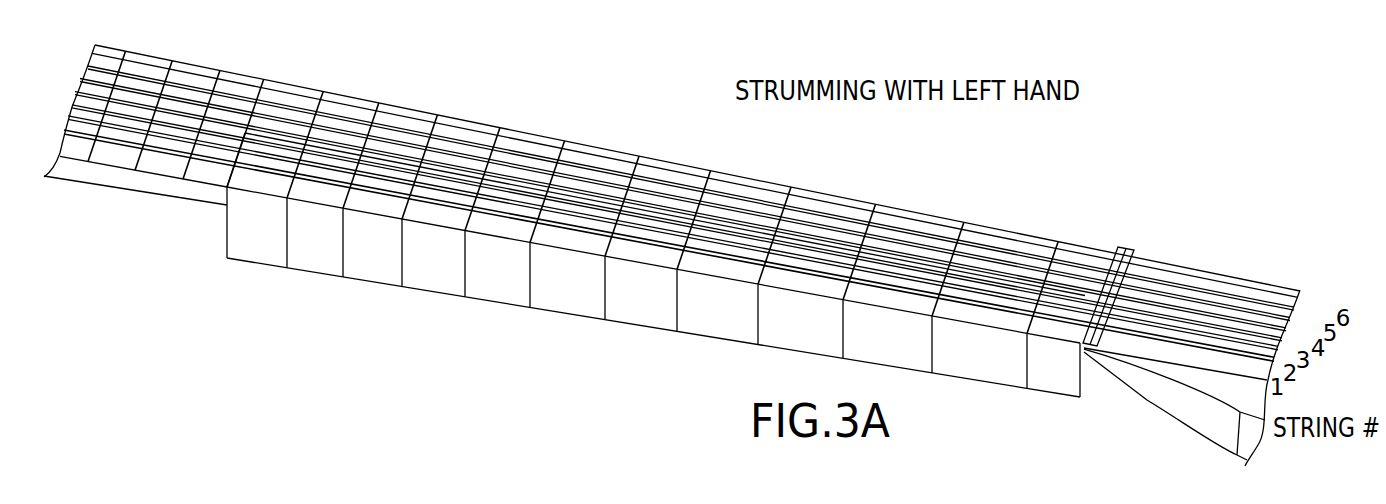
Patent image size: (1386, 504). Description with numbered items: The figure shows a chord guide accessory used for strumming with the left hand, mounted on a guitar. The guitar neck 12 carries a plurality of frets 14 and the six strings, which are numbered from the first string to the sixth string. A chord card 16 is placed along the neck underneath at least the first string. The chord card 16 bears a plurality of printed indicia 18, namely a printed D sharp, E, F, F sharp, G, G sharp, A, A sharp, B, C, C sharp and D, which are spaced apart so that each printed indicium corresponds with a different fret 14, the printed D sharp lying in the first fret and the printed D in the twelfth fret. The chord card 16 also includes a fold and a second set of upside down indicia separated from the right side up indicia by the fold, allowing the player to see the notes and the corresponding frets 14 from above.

The guitar neck 12 is at (405, 118).
The frets 14 is at (565, 153).
The chord card 16 is at (655, 265).
The printed indicia 18 is at (272, 253).